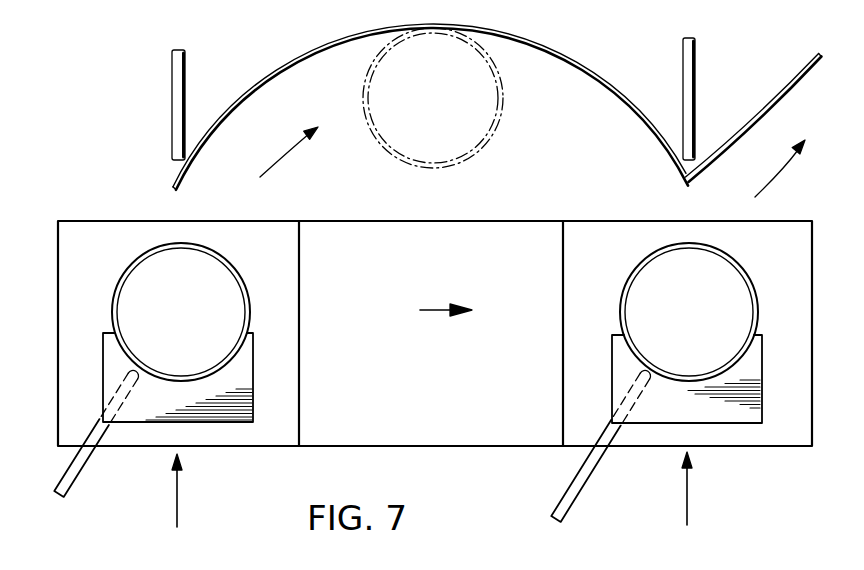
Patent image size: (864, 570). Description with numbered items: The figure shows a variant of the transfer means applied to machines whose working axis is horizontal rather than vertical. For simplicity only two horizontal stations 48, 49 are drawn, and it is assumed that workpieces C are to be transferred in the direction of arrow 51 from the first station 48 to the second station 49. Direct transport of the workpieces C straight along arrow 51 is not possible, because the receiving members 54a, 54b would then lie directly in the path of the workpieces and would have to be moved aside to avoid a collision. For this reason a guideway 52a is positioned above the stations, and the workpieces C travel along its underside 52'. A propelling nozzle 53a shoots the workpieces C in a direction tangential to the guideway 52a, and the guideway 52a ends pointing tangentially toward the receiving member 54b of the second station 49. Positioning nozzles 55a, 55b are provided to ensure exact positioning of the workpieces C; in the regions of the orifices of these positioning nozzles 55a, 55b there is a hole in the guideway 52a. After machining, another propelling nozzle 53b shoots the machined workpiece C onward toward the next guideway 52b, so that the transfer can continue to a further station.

The horizontal station 48 is at (182, 503).
The horizontal station 49 is at (694, 504).
The arrow 51 is at (435, 312).
The guideway 52a is at (258, 83).
The underside of the guideway 52' is at (432, 109).
The next guideway 52b is at (803, 63).
The propelling nozzle 53a is at (80, 468).
The propelling nozzle 53b is at (577, 478).
The receiving member 54a is at (238, 413).
The receiving member 54b is at (752, 418).
The positioning nozzle 55a is at (174, 63).
The positioning nozzle 55b is at (689, 95).
The workpiece C is at (465, 145).